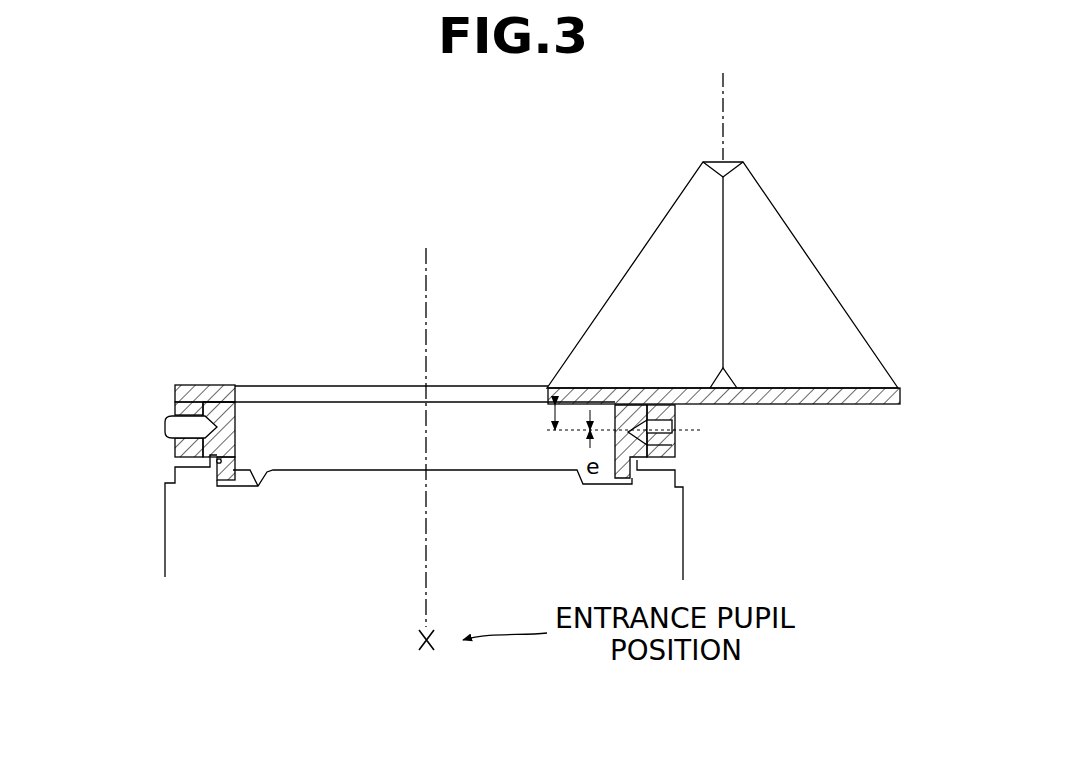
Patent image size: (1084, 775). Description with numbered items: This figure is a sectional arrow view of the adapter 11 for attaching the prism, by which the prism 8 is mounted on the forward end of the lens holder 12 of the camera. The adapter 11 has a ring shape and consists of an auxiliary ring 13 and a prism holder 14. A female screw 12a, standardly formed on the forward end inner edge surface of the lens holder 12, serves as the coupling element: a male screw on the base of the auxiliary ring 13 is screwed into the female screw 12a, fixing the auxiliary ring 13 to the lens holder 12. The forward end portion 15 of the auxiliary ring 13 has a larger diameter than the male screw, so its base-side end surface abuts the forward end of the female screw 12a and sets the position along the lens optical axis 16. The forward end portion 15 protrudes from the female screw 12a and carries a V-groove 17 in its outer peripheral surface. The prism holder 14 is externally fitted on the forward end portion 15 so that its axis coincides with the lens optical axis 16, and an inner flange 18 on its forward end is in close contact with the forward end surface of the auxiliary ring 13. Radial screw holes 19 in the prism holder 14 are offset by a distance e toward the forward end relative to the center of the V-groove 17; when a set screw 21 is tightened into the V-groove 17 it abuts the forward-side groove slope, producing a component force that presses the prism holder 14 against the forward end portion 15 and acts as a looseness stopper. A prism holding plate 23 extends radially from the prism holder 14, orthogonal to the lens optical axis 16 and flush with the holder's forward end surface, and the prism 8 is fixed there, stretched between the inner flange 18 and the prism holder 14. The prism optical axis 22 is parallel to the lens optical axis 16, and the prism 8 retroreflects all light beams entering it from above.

The prism 8 is at (785, 217).
The adapter for attaching the prism 11 is at (177, 385).
The lens holder 12 is at (685, 543).
The female screw 12a is at (233, 470).
The auxiliary ring 13 is at (237, 443).
The prism holder 14 is at (173, 408).
The forward end portion 15 is at (675, 407).
The lens optical axis 16 is at (427, 281).
The V-groove 17 is at (662, 445).
The inner flange 18 is at (213, 387).
The screw hole 19 is at (675, 433).
The set screw 21 is at (167, 428).
The prism optical axis 22 is at (723, 103).
The prism holding plate 23 is at (857, 407).